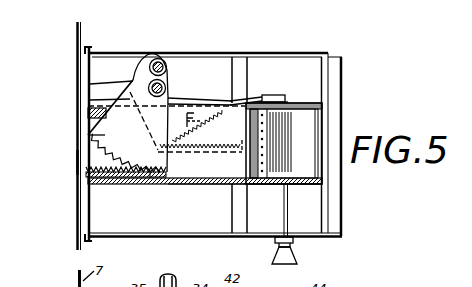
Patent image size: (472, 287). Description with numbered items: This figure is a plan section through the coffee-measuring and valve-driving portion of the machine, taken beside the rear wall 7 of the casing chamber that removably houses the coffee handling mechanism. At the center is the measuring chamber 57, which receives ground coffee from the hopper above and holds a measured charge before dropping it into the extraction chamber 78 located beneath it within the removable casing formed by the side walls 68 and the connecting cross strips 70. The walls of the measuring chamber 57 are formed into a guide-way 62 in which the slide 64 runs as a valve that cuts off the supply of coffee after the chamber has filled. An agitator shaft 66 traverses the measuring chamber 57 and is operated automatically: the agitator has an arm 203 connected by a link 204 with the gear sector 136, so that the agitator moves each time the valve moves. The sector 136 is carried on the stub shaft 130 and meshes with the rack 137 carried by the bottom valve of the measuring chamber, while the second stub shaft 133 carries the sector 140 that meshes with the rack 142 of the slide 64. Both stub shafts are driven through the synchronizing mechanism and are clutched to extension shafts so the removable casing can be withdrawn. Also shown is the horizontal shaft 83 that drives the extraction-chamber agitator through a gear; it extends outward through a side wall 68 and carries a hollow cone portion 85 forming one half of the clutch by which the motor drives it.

The rear wall 7 is at (76, 161).
The measuring chamber 57 is at (302, 128).
The guide-way 62 is at (151, 178).
The slide 64 is at (193, 169).
The agitator shaft 66 is at (267, 150).
The side walls 68 is at (268, 52).
The cross strips 70 is at (88, 207).
The extraction chamber 78 is at (312, 86).
The horizontal shaft 83 is at (286, 208).
The hollow cone portion 85 is at (286, 253).
The shaft 130 is at (160, 59).
The shaft 133 is at (166, 89).
The sector 136 is at (90, 88).
The rack 137 is at (210, 154).
The sector 140 is at (88, 135).
The rack 142 is at (119, 183).
The arm 203 is at (276, 95).
The link 204 is at (254, 97).